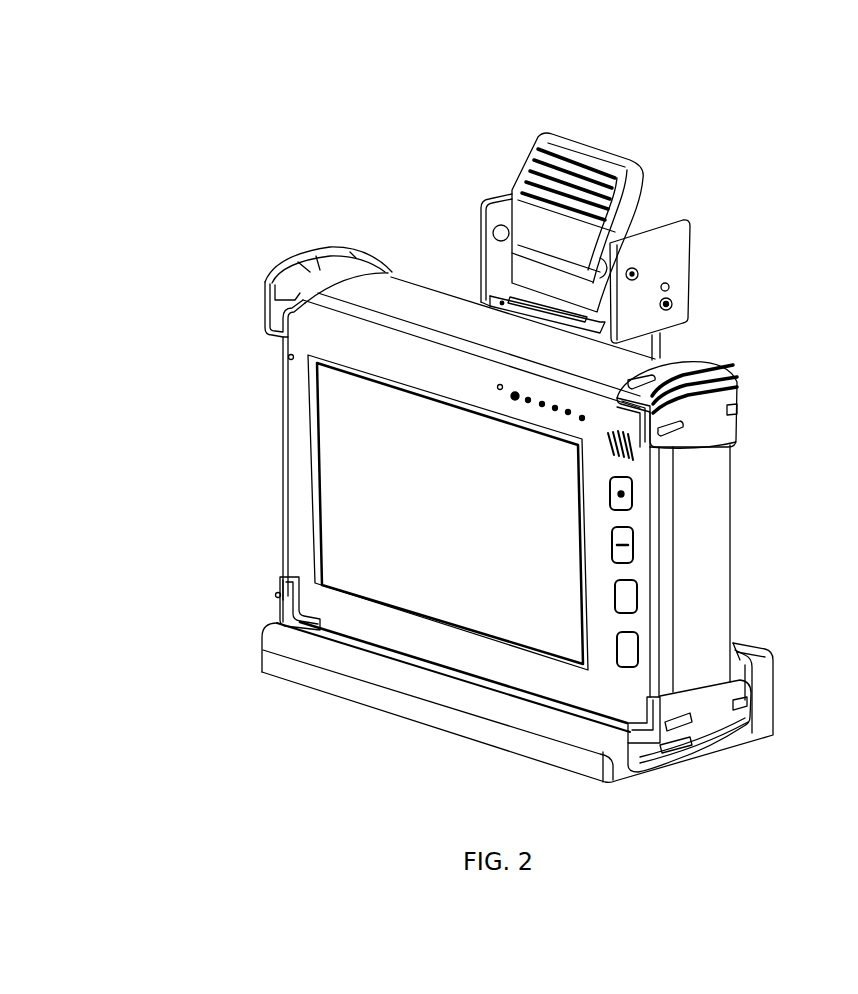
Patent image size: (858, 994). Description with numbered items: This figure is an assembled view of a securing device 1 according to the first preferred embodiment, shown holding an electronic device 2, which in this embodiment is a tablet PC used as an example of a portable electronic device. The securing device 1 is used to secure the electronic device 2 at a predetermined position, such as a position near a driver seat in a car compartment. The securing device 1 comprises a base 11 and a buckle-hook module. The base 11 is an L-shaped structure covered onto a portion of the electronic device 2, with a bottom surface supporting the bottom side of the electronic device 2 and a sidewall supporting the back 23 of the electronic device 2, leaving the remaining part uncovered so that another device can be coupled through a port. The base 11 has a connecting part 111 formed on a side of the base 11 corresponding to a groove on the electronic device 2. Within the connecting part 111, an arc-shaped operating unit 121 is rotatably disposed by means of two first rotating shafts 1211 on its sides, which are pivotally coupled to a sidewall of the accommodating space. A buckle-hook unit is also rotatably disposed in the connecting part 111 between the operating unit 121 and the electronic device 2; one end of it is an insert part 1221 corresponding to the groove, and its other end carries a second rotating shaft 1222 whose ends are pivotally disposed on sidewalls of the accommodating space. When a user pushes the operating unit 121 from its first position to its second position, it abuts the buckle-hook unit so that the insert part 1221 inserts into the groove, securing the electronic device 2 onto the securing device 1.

The securing device 1 is at (433, 56).
The electronic device 2 is at (192, 408).
The base 11 is at (410, 707).
The back 23 is at (736, 548).
The connecting part 111 is at (675, 240).
The operating unit 121 is at (588, 157).
The first rotating shaft 1211 is at (505, 226).
The insert part 1221 is at (517, 318).
The second rotating shaft 1222 is at (672, 303).